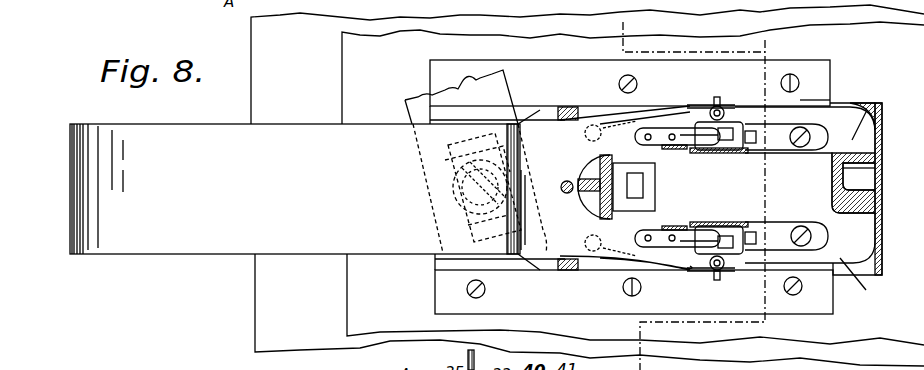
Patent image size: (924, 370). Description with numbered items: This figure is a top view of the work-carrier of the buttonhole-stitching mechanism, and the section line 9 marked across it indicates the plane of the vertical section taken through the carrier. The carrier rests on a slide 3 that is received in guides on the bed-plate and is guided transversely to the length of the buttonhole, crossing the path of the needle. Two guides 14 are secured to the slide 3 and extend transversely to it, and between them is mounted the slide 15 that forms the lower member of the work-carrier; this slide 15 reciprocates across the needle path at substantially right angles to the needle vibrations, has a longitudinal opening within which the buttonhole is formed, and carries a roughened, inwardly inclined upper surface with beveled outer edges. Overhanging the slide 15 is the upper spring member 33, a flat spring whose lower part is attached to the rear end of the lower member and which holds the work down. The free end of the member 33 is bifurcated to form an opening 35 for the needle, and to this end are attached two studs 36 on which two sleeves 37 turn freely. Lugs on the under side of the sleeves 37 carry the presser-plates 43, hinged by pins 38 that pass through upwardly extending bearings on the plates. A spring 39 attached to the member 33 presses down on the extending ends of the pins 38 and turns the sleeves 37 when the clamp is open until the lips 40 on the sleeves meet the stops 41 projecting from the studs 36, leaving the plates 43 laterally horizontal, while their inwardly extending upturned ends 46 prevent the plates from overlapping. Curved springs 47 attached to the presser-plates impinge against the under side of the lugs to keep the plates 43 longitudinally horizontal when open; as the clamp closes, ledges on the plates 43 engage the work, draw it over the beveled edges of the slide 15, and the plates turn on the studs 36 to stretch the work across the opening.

The slide 3 is at (858, 54).
The section line 9 9 is at (690, 25).
The guides 14 is at (631, 187).
The slide 15 is at (883, 128).
The upper spring member 33 is at (297, 189).
The opening 35 is at (590, 172).
The studs 36 is at (765, 150).
The sleeves 37 is at (732, 152).
The pins 38 is at (726, 105).
The spring 39 is at (690, 108).
The lips 40 is at (716, 152).
The stops 41 is at (684, 148).
The presser-plates 43 is at (866, 112).
The upturned ends 46 is at (860, 178).
The curved springs 47 is at (780, 128).